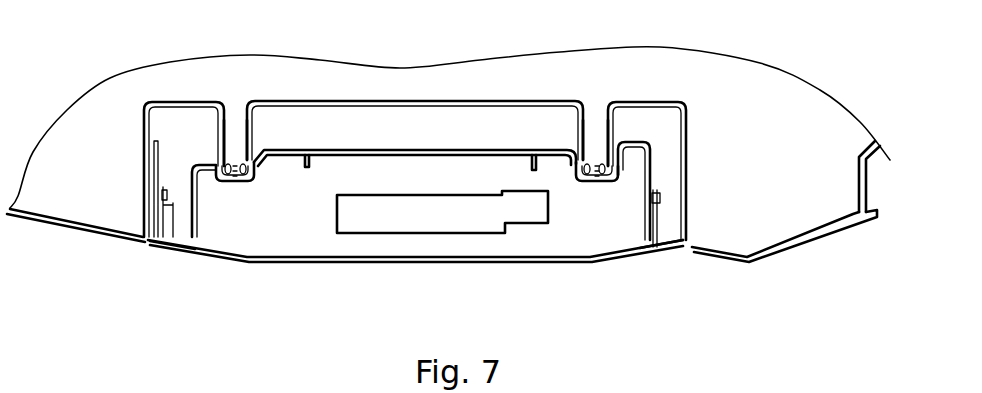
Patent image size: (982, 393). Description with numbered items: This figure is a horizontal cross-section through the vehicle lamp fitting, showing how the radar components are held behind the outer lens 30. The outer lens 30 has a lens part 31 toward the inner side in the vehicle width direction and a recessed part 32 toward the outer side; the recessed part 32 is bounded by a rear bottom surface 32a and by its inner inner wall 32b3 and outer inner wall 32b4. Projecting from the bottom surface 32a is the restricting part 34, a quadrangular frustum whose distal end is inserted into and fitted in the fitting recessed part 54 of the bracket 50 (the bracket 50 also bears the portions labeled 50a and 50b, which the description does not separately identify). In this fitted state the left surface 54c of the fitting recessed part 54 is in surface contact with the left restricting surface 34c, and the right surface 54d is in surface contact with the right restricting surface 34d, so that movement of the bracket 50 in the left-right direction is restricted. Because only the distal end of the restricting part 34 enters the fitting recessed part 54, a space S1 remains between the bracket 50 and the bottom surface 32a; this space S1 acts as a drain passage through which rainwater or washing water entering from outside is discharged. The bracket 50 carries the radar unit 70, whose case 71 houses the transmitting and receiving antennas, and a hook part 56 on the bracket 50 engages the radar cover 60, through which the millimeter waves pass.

The outer lens 30 is at (448, 160).
The lens part 31 is at (50, 225).
The recessed part 32 is at (409, 173).
The bottom surface 32a is at (473, 115).
The inner inner wall 32b3 is at (173, 247).
The outer inner wall 32b4 is at (643, 205).
The restricting part 34 is at (415, 135).
The left restricting surface 34c is at (217, 128).
The right restricting surface 34d is at (252, 128).
The bracket 50 is at (415, 155).
The lower surface of bracket member 50a is at (378, 157).
The upper surface of bracket member 50b is at (327, 146).
The fitting recessed part 54 is at (420, 202).
The left surface 54c is at (227, 174).
The right surface 54d is at (242, 174).
The hook part 56 is at (160, 208).
The radar cover 60 is at (347, 262).
The radar unit 70 is at (442, 251).
The case 71 is at (437, 237).
The space S1 is at (457, 141).